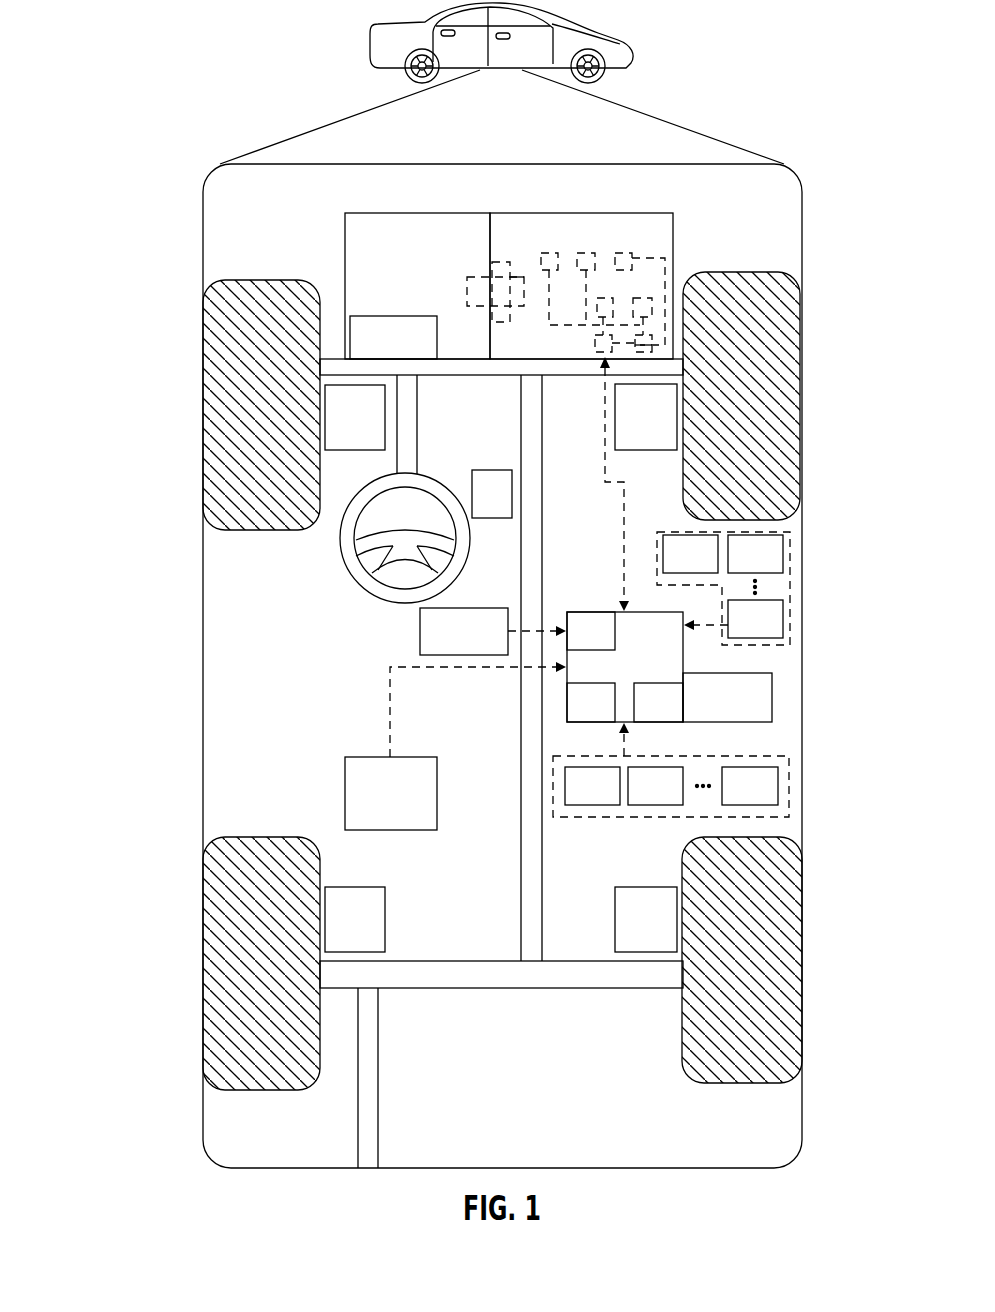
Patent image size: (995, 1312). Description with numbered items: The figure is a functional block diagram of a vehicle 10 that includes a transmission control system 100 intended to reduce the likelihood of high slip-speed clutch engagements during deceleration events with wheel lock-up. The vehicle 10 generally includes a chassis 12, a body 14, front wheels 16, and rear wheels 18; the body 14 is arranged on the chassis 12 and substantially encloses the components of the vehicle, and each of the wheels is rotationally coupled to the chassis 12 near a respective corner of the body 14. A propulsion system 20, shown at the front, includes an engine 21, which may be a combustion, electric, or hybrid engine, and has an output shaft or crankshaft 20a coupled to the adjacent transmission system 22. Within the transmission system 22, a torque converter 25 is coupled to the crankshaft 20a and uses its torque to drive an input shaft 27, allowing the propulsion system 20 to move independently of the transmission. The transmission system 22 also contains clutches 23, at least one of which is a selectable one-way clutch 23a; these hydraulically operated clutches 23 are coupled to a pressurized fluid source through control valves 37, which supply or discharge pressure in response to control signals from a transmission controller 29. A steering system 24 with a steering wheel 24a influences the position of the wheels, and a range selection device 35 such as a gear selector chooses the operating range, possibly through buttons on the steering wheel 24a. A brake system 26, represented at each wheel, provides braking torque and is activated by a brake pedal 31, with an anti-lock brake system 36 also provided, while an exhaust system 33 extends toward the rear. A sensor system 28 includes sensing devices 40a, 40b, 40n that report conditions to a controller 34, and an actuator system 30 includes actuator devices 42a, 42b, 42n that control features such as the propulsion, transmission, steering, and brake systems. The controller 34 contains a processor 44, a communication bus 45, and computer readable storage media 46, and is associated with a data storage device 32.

The transmission control system 100 is at (786, 33).
The vehicle 10 is at (575, 27).
The chassis 12 is at (520, 885).
The body 14 is at (203, 826).
The front wheels 16 is at (250, 280).
The rear wheels 18 is at (260, 1092).
The propulsion system 20 is at (378, 288).
The output shaft or crankshaft 20a is at (487, 278).
The engine 21 is at (378, 353).
The transmission system 22 is at (505, 248).
The clutches 23 is at (582, 253).
The selectable one-way clutch (SOWC) 23a is at (544, 253).
The steering system 24 is at (427, 477).
The steering wheel 24a is at (367, 590).
The torque converter 25 is at (495, 322).
The brake system 26 is at (340, 434).
The input shaft 27 is at (517, 280).
The sensor system 28 is at (791, 622).
The transmission controller 29 is at (602, 351).
The actuator system 30 is at (600, 817).
The brake pedal 31 is at (477, 510).
The data storage device 32 is at (712, 714).
The exhaust system 33 is at (378, 1057).
The controller 34 is at (628, 673).
The range selection device 35 is at (449, 648).
The anti-lock brake system (ABS) 36 is at (376, 810).
The control valves 37 is at (645, 353).
The sensing device 40a is at (668, 570).
The sensing device 40b is at (733, 570).
The sensing device 40n is at (733, 635).
The actuator device 42a is at (570, 802).
The actuator device 42b is at (633, 802).
The actuator device 42n is at (728, 802).
The processor 44 is at (576, 719).
The communication bus 45 is at (576, 647).
The computer readable storage device or media 46 is at (643, 719).